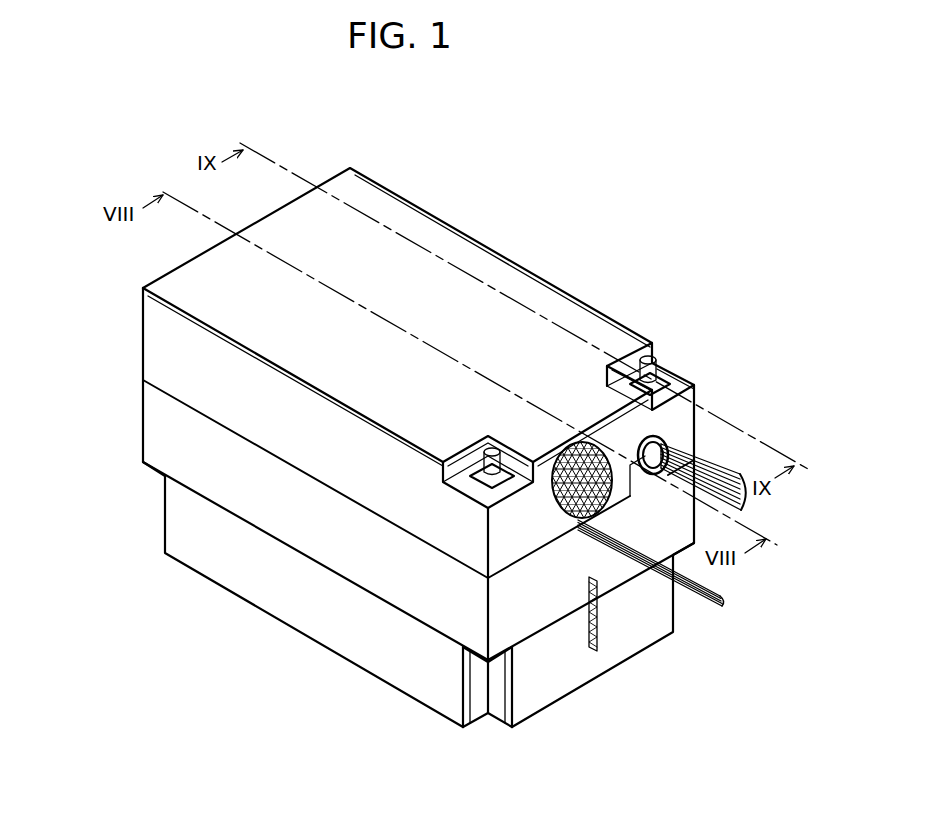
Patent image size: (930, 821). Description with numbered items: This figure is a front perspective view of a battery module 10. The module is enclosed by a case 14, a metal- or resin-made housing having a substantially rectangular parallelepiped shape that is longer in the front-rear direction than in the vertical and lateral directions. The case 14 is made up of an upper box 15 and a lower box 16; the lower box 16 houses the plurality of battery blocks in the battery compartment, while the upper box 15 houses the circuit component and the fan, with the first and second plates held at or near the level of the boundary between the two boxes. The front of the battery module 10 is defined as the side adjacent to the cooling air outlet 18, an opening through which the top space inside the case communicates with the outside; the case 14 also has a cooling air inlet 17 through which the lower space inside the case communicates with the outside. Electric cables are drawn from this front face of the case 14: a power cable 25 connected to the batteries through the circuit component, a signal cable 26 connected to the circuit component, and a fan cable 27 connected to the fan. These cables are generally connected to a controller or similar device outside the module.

The battery module 10 is at (624, 190).
The case 14 is at (77, 332).
The upper box 15 is at (155, 344).
The lower box 16 is at (155, 426).
The cooling air inlet 17 is at (597, 618).
The cooling air outlet 18 is at (567, 516).
The power cable 25 is at (662, 458).
The signal cable 26 is at (722, 476).
The fan cable 27 is at (694, 600).